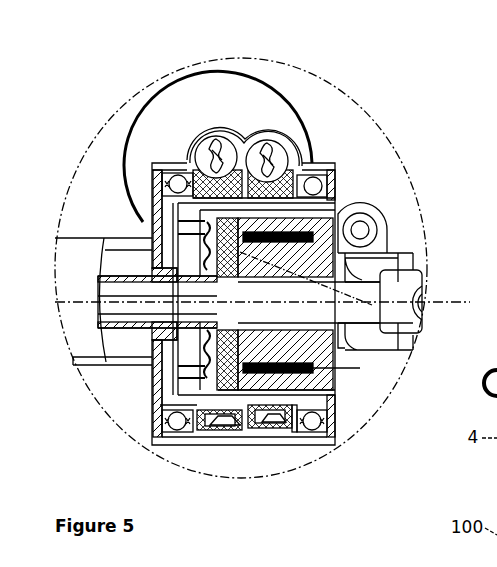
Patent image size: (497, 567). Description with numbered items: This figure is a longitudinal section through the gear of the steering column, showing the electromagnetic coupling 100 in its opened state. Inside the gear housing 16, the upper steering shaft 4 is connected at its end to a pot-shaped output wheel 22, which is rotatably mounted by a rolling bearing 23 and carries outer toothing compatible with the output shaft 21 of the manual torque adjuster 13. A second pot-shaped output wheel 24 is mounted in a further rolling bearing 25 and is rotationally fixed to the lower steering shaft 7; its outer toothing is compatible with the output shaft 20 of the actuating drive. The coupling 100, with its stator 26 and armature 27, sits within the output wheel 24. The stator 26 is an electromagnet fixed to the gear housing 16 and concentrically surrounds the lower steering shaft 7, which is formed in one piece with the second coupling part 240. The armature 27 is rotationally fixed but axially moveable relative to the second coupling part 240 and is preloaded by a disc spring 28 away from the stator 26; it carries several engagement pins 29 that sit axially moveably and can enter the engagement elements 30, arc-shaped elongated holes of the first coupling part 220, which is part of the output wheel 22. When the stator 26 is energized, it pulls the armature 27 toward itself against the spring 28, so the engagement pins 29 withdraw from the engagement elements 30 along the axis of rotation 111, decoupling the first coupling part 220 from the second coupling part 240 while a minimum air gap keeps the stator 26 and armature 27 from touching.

The electromagnetic coupling 100 is at (150, 163).
The manual torque adjuster 13 is at (238, 105).
The output shaft of the actuating drive 20 is at (293, 147).
The output shaft of the manual torque adjuster 21 is at (200, 153).
The rolling bearing 23 is at (152, 180).
The stator 26 is at (320, 233).
The engagement elements 30 is at (150, 223).
The engagement pins 29 is at (103, 247).
The disc spring 28 is at (167, 262).
The second coupling part 240 is at (120, 288).
The upper steering shaft 4 is at (117, 316).
The first coupling part 220 is at (130, 363).
The output wheel 22 is at (230, 432).
The gear housing 16 is at (265, 430).
The second output wheel 24 is at (294, 432).
The rolling bearing 25 is at (311, 432).
The lower steering shaft 7 is at (362, 312).
The axis of rotation 111 is at (393, 298).
The armature 27 is at (393, 317).